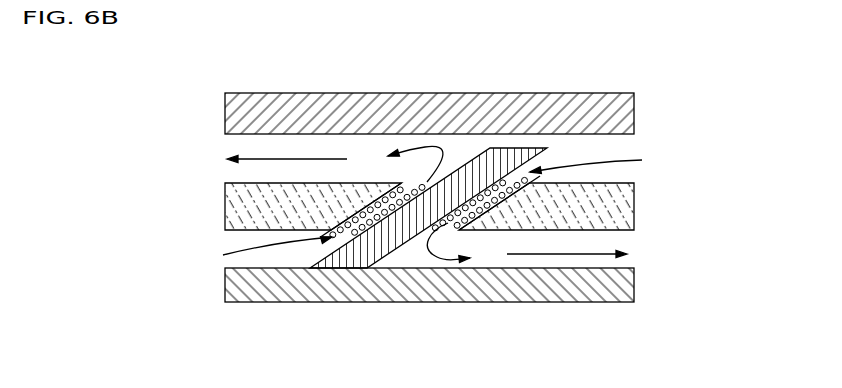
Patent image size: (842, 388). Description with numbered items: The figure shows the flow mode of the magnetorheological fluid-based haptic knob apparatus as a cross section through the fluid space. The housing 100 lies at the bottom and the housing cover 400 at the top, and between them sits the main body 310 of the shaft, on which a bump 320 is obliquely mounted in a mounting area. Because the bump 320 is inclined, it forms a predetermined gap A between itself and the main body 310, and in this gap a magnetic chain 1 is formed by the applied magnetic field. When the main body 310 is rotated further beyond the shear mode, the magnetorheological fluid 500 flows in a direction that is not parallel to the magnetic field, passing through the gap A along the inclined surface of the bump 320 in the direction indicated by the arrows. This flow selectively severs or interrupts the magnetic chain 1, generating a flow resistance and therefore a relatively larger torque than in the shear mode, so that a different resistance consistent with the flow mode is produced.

The housing 100 is at (612, 288).
The main body 310 is at (603, 218).
The bump 320 is at (382, 243).
The housing cover 400 is at (608, 116).
The magnetorheological fluid 500 is at (256, 160).
The magnetic chain 1 is at (363, 240).
The gap A is at (518, 182).